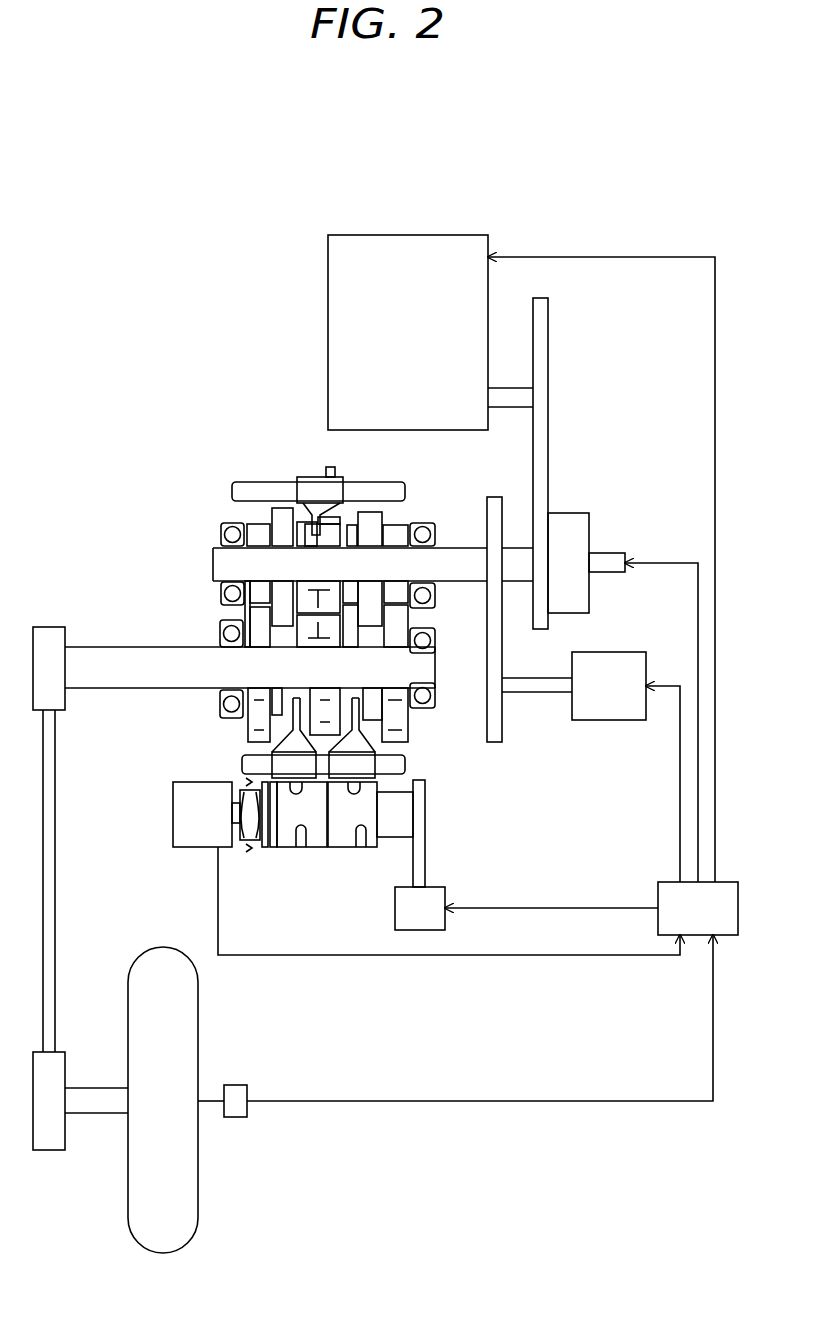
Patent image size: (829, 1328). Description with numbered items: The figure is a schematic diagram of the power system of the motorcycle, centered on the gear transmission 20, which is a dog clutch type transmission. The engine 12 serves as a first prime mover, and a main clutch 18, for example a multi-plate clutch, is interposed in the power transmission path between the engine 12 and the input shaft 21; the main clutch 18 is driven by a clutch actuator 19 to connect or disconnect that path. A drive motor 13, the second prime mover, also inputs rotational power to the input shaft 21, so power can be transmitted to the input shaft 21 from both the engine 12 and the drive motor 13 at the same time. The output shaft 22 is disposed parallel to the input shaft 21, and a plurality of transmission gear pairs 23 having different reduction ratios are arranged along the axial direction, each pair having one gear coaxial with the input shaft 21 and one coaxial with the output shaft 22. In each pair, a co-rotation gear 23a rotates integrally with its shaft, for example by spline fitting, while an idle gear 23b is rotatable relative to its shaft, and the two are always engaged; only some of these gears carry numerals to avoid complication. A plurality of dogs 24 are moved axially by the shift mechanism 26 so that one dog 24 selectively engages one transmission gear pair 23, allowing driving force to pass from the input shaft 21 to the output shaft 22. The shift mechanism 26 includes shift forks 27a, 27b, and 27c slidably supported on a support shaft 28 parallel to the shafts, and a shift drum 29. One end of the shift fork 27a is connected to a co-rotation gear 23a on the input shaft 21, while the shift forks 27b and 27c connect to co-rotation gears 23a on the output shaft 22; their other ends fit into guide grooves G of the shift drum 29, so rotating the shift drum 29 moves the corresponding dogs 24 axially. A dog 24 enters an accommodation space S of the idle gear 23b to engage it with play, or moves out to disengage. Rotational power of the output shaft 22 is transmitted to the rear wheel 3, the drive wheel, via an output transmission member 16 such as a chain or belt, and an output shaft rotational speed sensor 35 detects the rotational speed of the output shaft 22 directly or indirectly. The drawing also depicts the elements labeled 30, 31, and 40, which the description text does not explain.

The rear wheel 3 is at (198, 1012).
The engine 12 is at (403, 235).
The drive motor 13 is at (603, 720).
The output transmission member 16 is at (56, 888).
The main clutch 18 is at (573, 513).
The clutch actuator 19 is at (606, 553).
The gear transmission 20 is at (312, 591).
The input shaft 21 is at (470, 548).
The output shaft 22 is at (136, 647).
The transmission gear pairs 23 is at (321, 468).
The co-rotation gear 23a is at (328, 518).
The idle gear 23b is at (282, 508).
The dogs 24 is at (248, 735).
The shift mechanism 26 is at (262, 847).
The shift fork 27a is at (312, 488).
The shift fork 27b is at (275, 752).
The shift fork 27c is at (362, 770).
The support shaft 28 is at (273, 482).
The shift drum 29 is at (398, 840).
The shift actuator 30 is at (436, 887).
The select actuator 31 is at (200, 847).
The output shaft rotational speed sensor 35 is at (236, 1085).
The ECU 40 is at (725, 882).
The accommodation space S is at (228, 706).
The guide grooves G is at (357, 847).